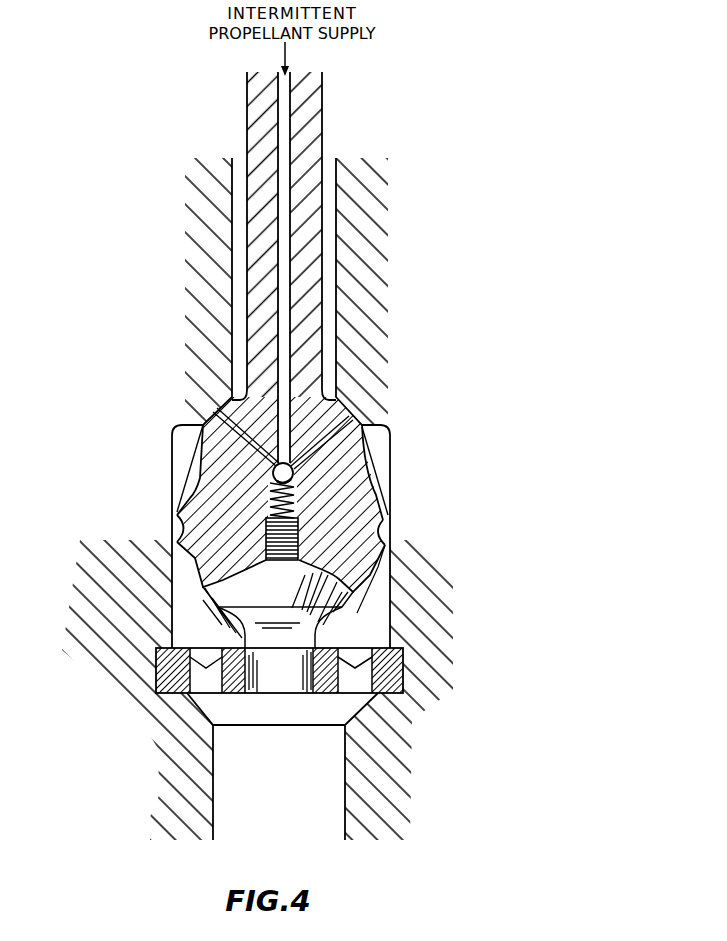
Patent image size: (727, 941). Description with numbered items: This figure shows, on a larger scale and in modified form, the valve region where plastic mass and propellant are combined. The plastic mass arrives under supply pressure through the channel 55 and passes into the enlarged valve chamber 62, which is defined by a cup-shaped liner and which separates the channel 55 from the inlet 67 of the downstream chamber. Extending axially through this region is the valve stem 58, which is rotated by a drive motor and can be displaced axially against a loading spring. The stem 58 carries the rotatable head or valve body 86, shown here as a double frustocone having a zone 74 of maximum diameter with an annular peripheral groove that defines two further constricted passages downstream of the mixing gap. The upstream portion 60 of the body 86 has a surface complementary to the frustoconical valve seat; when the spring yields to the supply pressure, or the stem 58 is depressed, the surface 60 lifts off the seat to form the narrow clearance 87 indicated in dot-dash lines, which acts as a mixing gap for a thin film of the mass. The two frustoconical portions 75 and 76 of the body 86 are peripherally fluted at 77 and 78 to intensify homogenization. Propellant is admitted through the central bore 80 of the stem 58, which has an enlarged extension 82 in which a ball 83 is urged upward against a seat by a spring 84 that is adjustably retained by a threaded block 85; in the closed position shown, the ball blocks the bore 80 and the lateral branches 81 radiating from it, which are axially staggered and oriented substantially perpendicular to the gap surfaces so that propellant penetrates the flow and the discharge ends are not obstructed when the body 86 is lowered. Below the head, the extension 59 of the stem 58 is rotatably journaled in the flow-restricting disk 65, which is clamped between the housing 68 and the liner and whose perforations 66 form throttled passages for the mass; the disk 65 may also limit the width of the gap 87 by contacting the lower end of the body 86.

The channel 55 is at (330, 225).
The valve stem 58 is at (310, 94).
The central bore 80 is at (287, 118).
The upstream portion 60 is at (228, 397).
The valve chamber 62 is at (378, 438).
The clearance (mixing gap) 87 is at (213, 412).
The lateral branches (passages) 81 is at (355, 418).
The enlarged extension / ball 82 is at (274, 486).
The spring 84 is at (270, 503).
The threaded block 85 is at (283, 559).
The peripheral fluting 77 is at (192, 477).
The frustoconical portion 75 is at (385, 503).
The zone of maximum diameter 74 is at (180, 528).
The peripheral fluting 78 is at (190, 557).
The frustoconical portion 76 is at (368, 577).
The ball 83 is at (293, 473).
The valve body (rotatable head) 86 is at (355, 553).
The flow-restricting disk 65 is at (398, 677).
The perforations 66 is at (203, 675).
The extension of stem 59 is at (275, 683).
The inlet 67 is at (222, 782).
The housing 68 is at (378, 742).